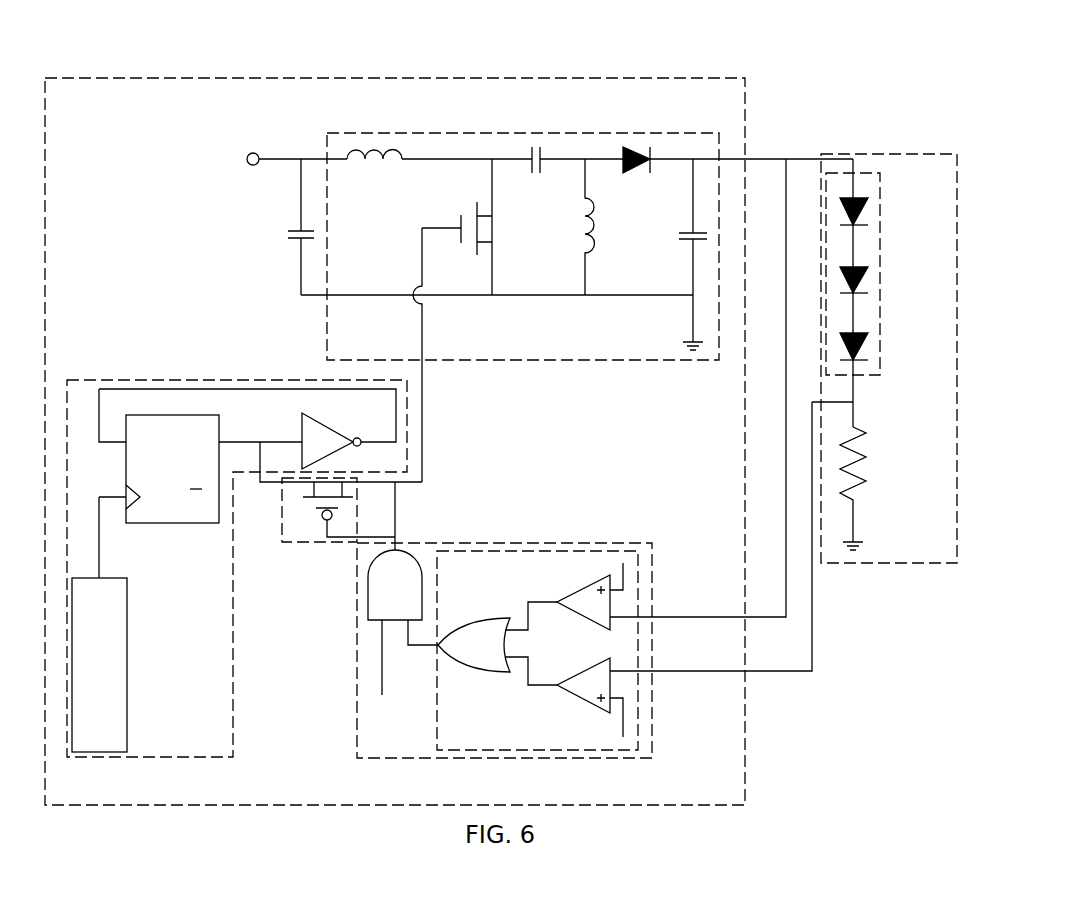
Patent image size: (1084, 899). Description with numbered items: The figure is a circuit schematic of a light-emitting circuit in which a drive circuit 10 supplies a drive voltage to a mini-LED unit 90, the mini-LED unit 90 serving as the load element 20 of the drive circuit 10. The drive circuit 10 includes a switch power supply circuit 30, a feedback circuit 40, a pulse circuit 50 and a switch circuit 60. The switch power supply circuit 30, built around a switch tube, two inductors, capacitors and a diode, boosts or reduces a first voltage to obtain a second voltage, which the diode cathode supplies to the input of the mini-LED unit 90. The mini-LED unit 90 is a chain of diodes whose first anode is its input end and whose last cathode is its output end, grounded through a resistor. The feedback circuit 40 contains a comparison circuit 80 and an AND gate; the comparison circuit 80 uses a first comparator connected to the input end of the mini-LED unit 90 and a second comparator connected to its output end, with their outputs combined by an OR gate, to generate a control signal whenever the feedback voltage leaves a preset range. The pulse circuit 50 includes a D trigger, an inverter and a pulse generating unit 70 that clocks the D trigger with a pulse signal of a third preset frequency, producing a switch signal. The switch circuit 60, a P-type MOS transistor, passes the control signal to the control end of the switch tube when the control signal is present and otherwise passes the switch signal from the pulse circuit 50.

The drive circuit 10 is at (745, 100).
The load element 20 is at (878, 154).
The switch power supply circuit 30 is at (556, 133).
The feedback circuit 40 is at (556, 543).
The pulse circuit 50 is at (233, 643).
The switch circuit 60 is at (313, 543).
The pulse generating unit 70 is at (127, 645).
The comparison circuit 80 is at (437, 740).
The mini-LED unit 90 is at (880, 240).